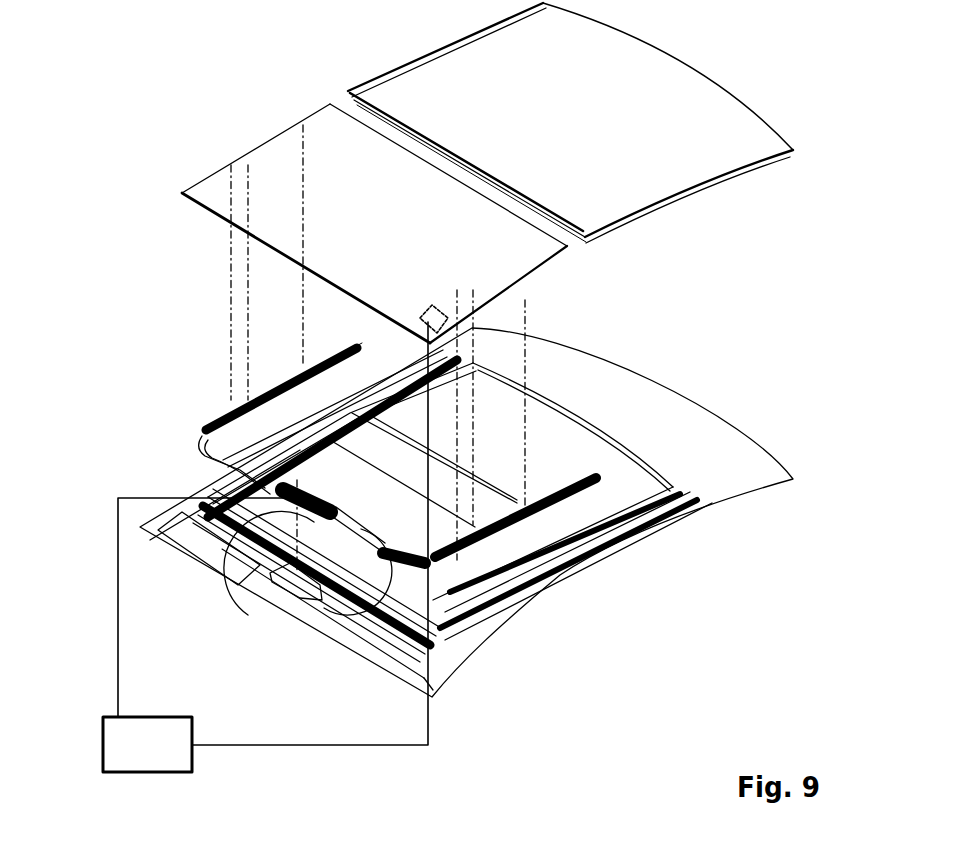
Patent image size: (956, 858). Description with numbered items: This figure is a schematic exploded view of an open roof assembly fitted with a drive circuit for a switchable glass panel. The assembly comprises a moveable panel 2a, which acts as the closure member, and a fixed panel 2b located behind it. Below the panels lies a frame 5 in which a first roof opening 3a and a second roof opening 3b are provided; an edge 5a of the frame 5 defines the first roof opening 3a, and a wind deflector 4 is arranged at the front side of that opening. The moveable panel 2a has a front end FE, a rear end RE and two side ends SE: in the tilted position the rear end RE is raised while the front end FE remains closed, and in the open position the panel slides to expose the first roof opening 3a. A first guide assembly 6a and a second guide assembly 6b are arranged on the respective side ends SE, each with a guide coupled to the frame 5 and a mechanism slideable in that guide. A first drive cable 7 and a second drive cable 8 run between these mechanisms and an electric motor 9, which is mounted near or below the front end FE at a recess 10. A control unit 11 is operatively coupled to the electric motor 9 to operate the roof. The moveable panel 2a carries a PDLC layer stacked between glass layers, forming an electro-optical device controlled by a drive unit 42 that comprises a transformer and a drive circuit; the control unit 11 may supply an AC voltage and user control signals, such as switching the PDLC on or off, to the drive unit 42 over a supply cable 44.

The moveable panel 2a is at (397, 235).
The fixed panel 2b is at (597, 131).
The first roof opening 3a is at (385, 518).
The second roof opening 3b is at (573, 468).
The wind deflector 4 is at (168, 537).
The frame 5 is at (516, 632).
The edge 5a is at (530, 555).
The first guide assembly 6a is at (537, 538).
The second guide assembly 6b is at (204, 390).
The first drive cable 7 is at (313, 626).
The second drive cable 8 is at (198, 452).
The electric motor 9 is at (207, 567).
The recess 10 is at (290, 583).
The control unit 11 is at (160, 756).
The drive unit 42 is at (428, 322).
The supply cable 44 is at (312, 746).
The rear end RE is at (380, 134).
The side ends SE is at (256, 142).
The front end FE is at (268, 269).